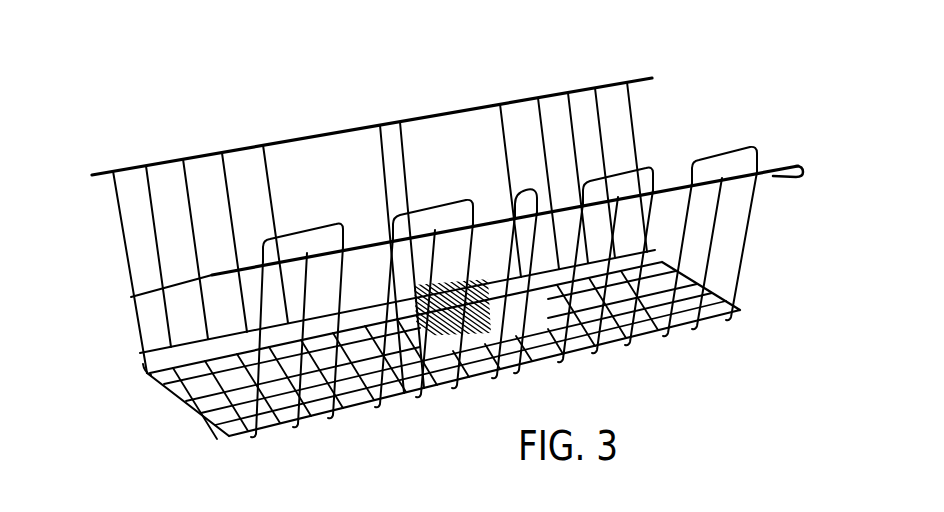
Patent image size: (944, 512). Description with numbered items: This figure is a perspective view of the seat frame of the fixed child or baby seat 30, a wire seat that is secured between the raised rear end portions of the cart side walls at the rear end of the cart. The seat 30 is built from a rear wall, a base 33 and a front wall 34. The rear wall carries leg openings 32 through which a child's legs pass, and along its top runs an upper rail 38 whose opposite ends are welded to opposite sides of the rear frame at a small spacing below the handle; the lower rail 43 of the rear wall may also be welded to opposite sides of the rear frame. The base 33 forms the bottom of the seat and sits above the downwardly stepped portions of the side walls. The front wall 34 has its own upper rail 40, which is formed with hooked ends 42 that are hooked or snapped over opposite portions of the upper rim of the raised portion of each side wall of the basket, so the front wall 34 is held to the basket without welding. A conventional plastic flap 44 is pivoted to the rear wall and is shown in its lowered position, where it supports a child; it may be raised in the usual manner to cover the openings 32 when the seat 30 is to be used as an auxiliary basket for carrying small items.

The child or baby seat 30 is at (668, 115).
The leg openings 32 is at (437, 126).
The base 33 is at (225, 392).
The front wall 34 is at (716, 262).
The upper rail 38 is at (310, 136).
The upper rail 40 is at (504, 214).
The hooked ends 42 is at (131, 297).
The lower rail 43 is at (148, 375).
The plastic flap 44 is at (403, 358).